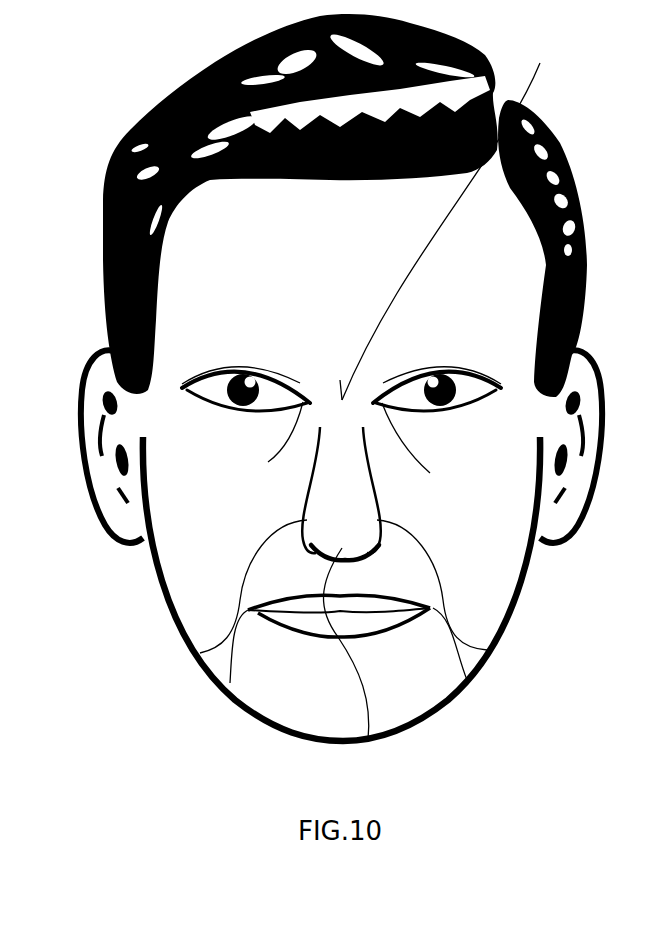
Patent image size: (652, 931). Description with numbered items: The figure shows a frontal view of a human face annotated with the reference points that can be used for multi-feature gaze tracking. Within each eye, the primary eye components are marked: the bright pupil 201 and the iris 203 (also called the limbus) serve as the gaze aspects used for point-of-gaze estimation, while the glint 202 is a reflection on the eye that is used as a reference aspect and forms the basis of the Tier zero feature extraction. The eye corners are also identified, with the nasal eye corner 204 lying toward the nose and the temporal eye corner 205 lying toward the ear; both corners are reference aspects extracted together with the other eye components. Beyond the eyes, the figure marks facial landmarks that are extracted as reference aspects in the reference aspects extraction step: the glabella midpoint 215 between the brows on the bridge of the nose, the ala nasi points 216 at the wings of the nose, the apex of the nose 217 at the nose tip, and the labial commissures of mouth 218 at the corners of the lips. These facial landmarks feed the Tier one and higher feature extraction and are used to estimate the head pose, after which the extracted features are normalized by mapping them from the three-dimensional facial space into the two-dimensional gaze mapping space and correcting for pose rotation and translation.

The pupil 201 is at (240, 375).
The glint 202 is at (262, 381).
The iris 203 is at (225, 409).
The nasal eye corner 204 is at (152, 545).
The temporal eye corner 205 is at (183, 398).
The glabella midpoint 215 is at (452, 219).
The ala nasi points 216 is at (200, 653).
The apex of the nose 217 is at (368, 740).
The labial commissures of mouth 218 is at (230, 683).